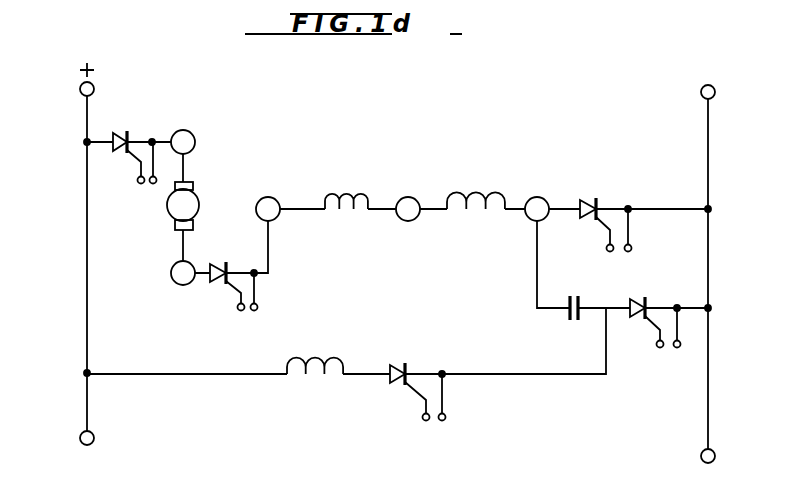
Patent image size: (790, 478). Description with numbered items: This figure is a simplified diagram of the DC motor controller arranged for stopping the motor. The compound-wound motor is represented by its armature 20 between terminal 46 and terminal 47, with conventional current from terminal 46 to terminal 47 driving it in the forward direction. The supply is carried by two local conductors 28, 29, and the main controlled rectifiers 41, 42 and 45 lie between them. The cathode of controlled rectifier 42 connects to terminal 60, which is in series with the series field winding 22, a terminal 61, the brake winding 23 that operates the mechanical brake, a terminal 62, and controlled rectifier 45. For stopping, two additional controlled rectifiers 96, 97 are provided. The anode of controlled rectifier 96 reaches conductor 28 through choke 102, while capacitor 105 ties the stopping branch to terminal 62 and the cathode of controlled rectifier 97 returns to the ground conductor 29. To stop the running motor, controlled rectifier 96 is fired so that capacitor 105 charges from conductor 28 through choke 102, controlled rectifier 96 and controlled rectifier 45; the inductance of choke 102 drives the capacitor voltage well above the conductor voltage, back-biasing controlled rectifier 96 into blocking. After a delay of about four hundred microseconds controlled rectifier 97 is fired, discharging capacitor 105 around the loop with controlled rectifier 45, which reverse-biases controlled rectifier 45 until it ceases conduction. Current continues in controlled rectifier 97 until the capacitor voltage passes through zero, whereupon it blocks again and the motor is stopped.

The motor armature 20 is at (197, 197).
The series field winding 22 is at (350, 192).
The brake winding 23 is at (481, 192).
The local conductor 28 is at (85, 285).
The local conductor 29 is at (711, 176).
The controlled rectifier 41 is at (125, 130).
The controlled rectifier 42 is at (212, 285).
The controlled rectifier 45 is at (597, 198).
The terminal 46 is at (176, 283).
The terminal 47 is at (192, 134).
The terminal 60 is at (274, 198).
The terminal 61 is at (413, 197).
The terminal 62 is at (540, 197).
The controlled rectifier 96 is at (407, 362).
The controlled rectifier 97 is at (640, 318).
The choke 102 is at (327, 345).
The capacitor 105 is at (571, 325).